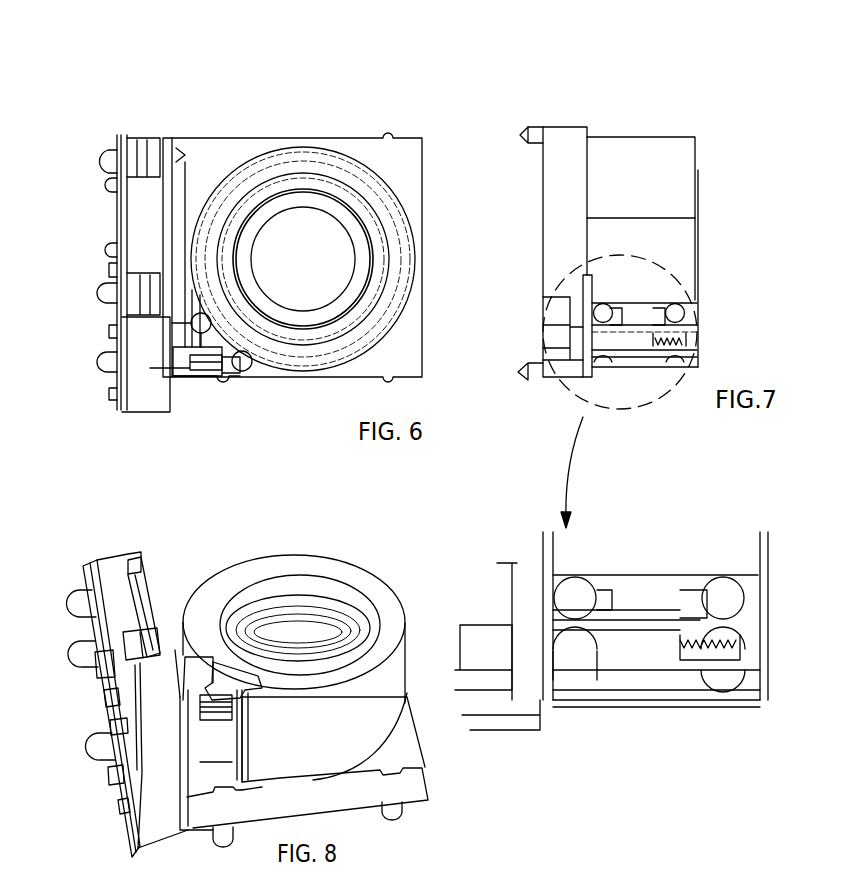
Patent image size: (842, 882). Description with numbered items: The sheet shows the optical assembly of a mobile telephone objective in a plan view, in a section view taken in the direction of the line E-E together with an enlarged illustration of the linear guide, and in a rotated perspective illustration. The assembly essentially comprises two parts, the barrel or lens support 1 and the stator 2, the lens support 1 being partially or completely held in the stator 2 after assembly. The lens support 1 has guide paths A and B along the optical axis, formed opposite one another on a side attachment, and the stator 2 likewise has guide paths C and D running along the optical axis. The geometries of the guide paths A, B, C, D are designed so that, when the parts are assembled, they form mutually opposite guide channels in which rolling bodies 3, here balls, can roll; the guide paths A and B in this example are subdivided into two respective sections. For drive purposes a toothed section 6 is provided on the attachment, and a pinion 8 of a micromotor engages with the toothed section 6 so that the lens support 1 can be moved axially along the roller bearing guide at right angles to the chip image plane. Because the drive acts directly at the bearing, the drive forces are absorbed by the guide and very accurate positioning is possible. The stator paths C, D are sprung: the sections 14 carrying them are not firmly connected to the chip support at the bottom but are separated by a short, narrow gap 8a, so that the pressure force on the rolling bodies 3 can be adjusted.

In FIG. 7, the lens support 1 is at (665, 165).
In FIG. 7, the stator 2 is at (683, 240).
In FIG. 6, the rolling bodies 3 is at (183, 380).
In FIG. 7, the rolling bodies 3 is at (717, 585).
In FIG. 7, the toothed section 6 is at (733, 640).
In FIG. 7, the pinion 8 is at (713, 663).
In FIG. 8, the gap 8a is at (262, 787).
In FIG. 8, the sections 14 is at (187, 660).
In FIG. 6, the guide path A is at (230, 350).
In FIG. 6, the guide path B is at (213, 330).
In FIG. 7, the guide path B is at (603, 593).
In FIG. 6, the guide path C is at (175, 318).
In FIG. 7, the guide path C is at (640, 575).
In FIG. 6, the guide path D is at (247, 371).
In FIG. 7, the guide path D is at (648, 692).
In FIG. 6, the section line E is at (78, 72).